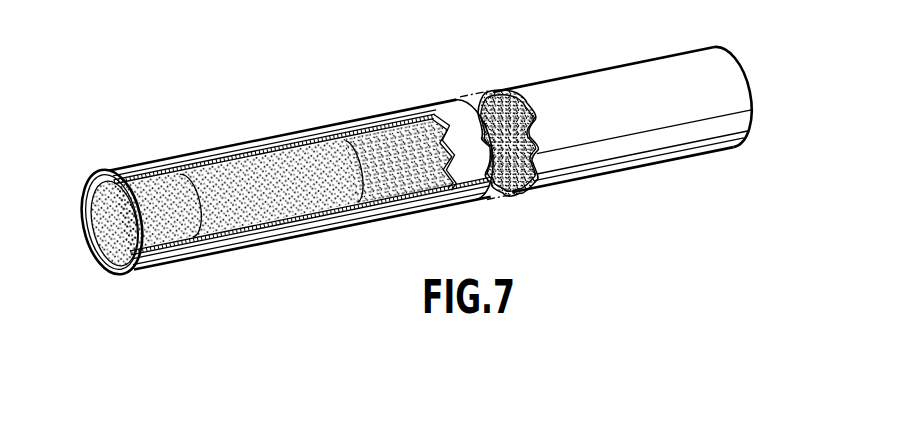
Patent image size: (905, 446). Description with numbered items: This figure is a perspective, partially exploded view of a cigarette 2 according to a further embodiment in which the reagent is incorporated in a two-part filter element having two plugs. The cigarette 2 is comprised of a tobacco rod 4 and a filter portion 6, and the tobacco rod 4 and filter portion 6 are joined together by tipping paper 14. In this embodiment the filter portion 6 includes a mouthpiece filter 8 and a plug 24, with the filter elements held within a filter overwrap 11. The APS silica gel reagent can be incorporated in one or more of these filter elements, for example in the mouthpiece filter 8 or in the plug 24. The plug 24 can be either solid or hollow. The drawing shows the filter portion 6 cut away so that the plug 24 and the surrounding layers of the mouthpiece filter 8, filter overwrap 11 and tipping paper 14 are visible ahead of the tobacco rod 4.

The cigarette 2 is at (216, 91).
The tobacco rod 4 is at (598, 82).
The filter portion 6 is at (168, 150).
The mouthpiece filter 8 is at (88, 192).
The filter overwrap 11 is at (104, 274).
The tipping paper 14 is at (287, 141).
The plug 24 is at (282, 204).